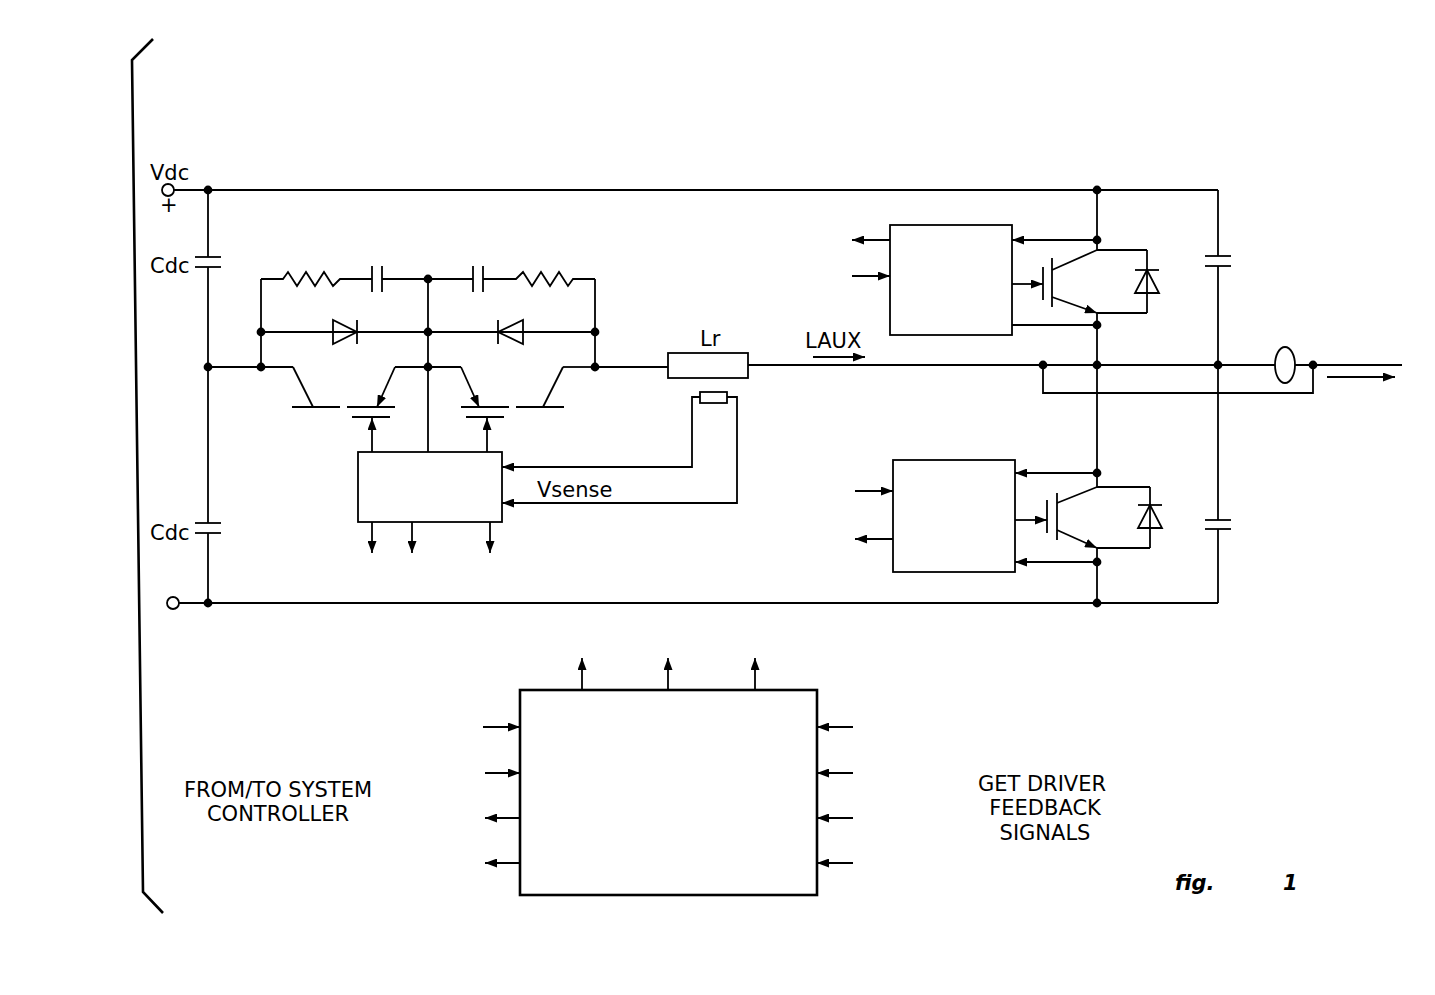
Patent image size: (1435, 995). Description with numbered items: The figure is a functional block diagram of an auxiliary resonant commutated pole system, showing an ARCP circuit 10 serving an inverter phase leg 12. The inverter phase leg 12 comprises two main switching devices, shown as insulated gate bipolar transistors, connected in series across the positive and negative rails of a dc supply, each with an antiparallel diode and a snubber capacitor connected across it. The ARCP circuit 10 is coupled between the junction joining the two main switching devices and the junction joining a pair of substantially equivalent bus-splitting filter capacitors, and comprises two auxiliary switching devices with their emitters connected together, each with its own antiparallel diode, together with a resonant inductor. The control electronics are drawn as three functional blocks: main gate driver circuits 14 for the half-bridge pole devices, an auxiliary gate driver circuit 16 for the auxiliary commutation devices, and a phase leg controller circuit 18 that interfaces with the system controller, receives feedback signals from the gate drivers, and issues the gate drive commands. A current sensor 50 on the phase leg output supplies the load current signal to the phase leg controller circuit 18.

The ARCP circuit 10 is at (437, 268).
The inverter phase leg 12 is at (1114, 162).
The main gate driver circuits 14 is at (947, 398).
The auxiliary gate driver circuit 16 is at (358, 505).
The phase leg controller circuit 18 is at (654, 763).
The current sensor 50 is at (1297, 351).